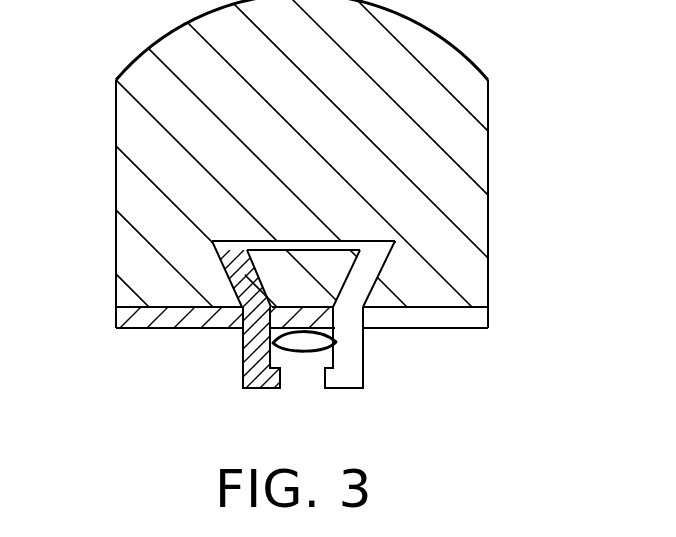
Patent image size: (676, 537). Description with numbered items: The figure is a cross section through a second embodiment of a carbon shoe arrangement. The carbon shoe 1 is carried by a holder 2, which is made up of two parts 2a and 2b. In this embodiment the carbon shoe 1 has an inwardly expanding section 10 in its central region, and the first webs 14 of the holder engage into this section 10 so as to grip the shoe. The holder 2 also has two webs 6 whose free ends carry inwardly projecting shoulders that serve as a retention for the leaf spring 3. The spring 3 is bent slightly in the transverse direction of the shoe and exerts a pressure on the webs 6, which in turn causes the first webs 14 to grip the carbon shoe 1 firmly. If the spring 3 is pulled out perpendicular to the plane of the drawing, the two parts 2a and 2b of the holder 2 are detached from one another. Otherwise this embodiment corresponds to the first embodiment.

The carbon shoe 1 is at (430, 104).
The holder 2 is at (185, 377).
The holder part 2a is at (489, 315).
The holder part 2b is at (116, 329).
The leaf spring 3 is at (292, 342).
The webs 6 is at (245, 389).
The inwardly expanding section 10 is at (267, 256).
The first webs 14 is at (227, 272).